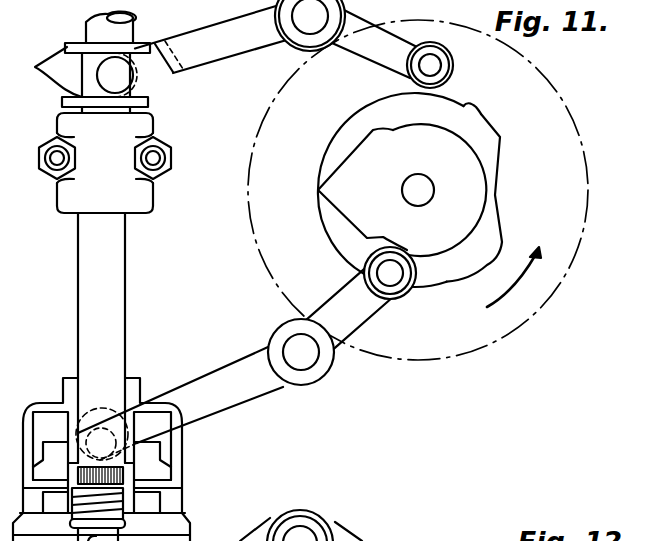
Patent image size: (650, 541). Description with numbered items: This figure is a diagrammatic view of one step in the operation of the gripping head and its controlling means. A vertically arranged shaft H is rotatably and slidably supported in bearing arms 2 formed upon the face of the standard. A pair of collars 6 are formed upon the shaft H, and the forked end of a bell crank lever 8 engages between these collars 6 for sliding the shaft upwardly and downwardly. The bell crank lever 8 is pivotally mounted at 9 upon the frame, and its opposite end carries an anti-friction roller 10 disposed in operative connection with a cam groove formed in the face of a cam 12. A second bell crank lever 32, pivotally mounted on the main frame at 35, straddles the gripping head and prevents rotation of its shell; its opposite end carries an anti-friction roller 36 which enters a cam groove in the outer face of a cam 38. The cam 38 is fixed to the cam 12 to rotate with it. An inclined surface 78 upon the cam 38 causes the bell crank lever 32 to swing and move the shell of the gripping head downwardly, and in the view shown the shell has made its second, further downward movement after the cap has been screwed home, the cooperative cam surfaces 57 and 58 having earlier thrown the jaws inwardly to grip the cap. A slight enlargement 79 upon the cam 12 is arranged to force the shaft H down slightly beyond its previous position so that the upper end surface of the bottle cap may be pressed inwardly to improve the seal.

The collars 6 is at (70, 49).
The bearing arms 2 is at (105, 163).
The shaft H is at (108, 267).
The cam-shaped upper end surfaces 57 is at (160, 461).
The annular cam surfaces 58 is at (168, 480).
The bell crank lever 8 is at (236, 50).
The pivot 9 is at (310, 25).
The anti-friction roller 10 is at (453, 64).
The cam 12 is at (337, 142).
The inclined surface 78 is at (340, 158).
The cam 38 is at (402, 190).
The enlargement 79 is at (483, 114).
The anti-friction roller 36 is at (402, 294).
The pivot 35 is at (310, 368).
The bell crank lever 32 is at (237, 388).